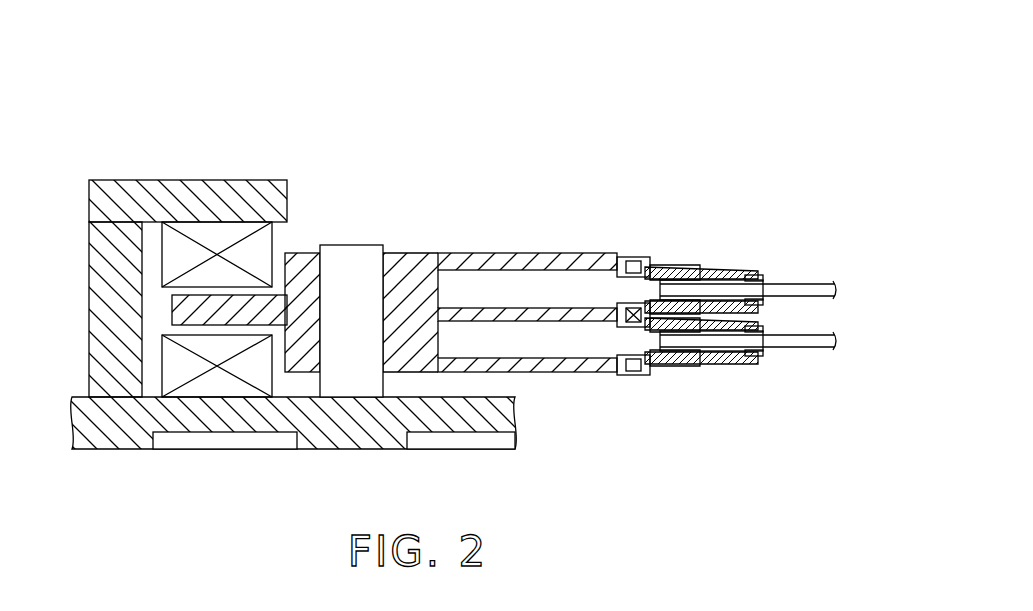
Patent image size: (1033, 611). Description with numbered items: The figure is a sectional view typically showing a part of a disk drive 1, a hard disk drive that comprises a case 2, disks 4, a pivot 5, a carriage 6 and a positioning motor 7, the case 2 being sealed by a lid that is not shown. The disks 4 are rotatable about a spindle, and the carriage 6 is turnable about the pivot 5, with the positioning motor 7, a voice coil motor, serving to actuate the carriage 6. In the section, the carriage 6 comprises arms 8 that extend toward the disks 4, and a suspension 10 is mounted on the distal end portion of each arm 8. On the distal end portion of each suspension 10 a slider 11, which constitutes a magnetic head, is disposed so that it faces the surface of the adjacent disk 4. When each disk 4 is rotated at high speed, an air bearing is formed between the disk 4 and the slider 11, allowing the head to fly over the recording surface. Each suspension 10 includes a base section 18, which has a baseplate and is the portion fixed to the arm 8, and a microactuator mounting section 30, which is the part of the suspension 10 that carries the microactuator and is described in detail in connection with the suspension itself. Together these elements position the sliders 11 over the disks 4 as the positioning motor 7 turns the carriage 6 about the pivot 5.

The disk drive 1 is at (233, 136).
The case 2 is at (126, 450).
The disk 4 is at (825, 283).
The pivot 5 is at (352, 253).
The carriage 6 is at (488, 251).
The positioning motor 7 is at (215, 399).
The arm 8 is at (583, 254).
The suspension 10 is at (727, 266).
The slider 11 is at (774, 276).
The base section 18 is at (657, 266).
The microactuator mounting section 30 is at (683, 265).